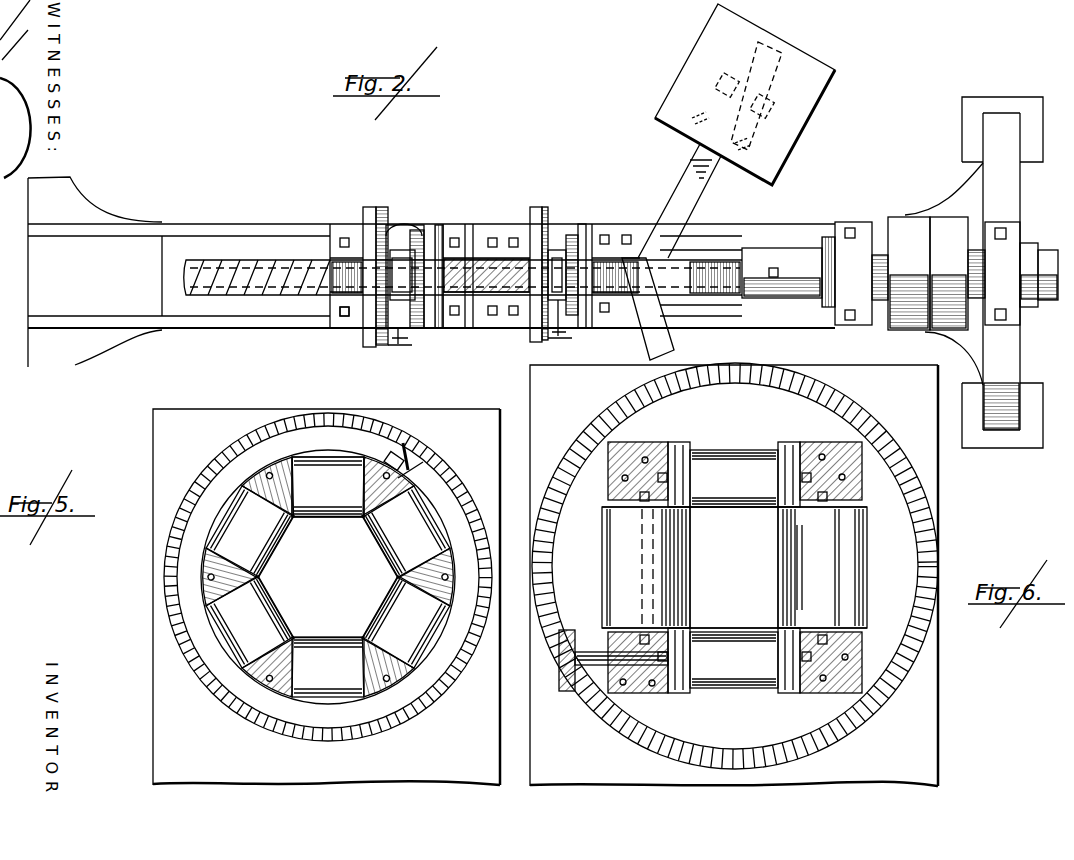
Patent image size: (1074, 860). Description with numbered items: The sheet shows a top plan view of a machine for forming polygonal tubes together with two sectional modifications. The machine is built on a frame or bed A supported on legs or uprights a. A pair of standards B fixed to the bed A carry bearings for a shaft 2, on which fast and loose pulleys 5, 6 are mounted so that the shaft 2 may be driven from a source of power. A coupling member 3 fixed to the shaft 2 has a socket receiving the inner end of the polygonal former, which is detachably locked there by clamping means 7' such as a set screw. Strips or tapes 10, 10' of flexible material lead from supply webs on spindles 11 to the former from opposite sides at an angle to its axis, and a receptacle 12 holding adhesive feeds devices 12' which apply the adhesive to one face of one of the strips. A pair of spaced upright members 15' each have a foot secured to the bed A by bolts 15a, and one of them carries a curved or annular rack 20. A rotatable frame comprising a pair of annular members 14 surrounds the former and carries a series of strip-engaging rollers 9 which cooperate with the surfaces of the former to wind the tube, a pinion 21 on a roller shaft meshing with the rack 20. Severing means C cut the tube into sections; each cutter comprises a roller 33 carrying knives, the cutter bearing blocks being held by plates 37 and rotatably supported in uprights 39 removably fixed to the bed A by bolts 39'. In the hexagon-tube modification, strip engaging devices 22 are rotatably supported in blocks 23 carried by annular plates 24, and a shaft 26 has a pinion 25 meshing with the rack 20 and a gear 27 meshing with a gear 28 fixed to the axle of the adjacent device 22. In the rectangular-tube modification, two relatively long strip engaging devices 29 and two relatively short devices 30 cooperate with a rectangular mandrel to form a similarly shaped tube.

In FIG. 2, the frame or bed A is at (232, 236).
In FIG. 2, the standards or supports B is at (846, 228).
In FIG. 2, the severing means C is at (405, 248).
In FIG. 2, the legs or uprights a is at (1005, 447).
In FIG. 2, the shaft 2 is at (877, 260).
In FIG. 2, the coupling member 3 is at (786, 254).
In FIG. 2, the fast pulley 5 is at (904, 218).
In FIG. 2, the loose pulley 6 is at (940, 228).
In FIG. 2, the clamping means 7' is at (771, 312).
In FIG. 2, the strip-engaging devices 9 is at (556, 250).
In FIG. 2, the strip or tape 10 is at (679, 201).
In FIG. 2, the strip or tape 10' is at (671, 309).
In FIG. 2, the spindle 11 is at (765, 105).
In FIG. 2, the receptacle 12 is at (751, 94).
In FIG. 2, the adhesive applying devices 12' is at (748, 122).
In FIG. 2, the annular members 14 is at (581, 230).
In FIG. 2, the upright members 15' is at (567, 259).
In FIG. 2, the bolts 15a is at (492, 240).
In FIG. 5, the curved or annular rack 20 is at (164, 548).
In FIG. 6, the curved or annular rack 20 is at (938, 546).
In FIG. 2, the pinion or gear 21 is at (570, 338).
In FIG. 5, the strip engaging devices 22 is at (391, 528).
In FIG. 5, the blocks 23 is at (275, 470).
In FIG. 5, the annular plates 24 is at (338, 698).
In FIG. 5, the pinion 25 is at (410, 440).
In FIG. 5, the shaft 26 is at (397, 466).
In FIG. 5, the gear 27 is at (420, 466).
In FIG. 5, the gear 28 is at (356, 481).
In FIG. 6, the long strip engaging devices 29 is at (673, 552).
In FIG. 6, the short strip engaging devices 30 is at (728, 457).
In FIG. 2, the roller 33 is at (405, 305).
In FIG. 2, the plates 37 is at (425, 227).
In FIG. 2, the uprights 39 is at (408, 258).
In FIG. 2, the bolts 39' is at (330, 335).